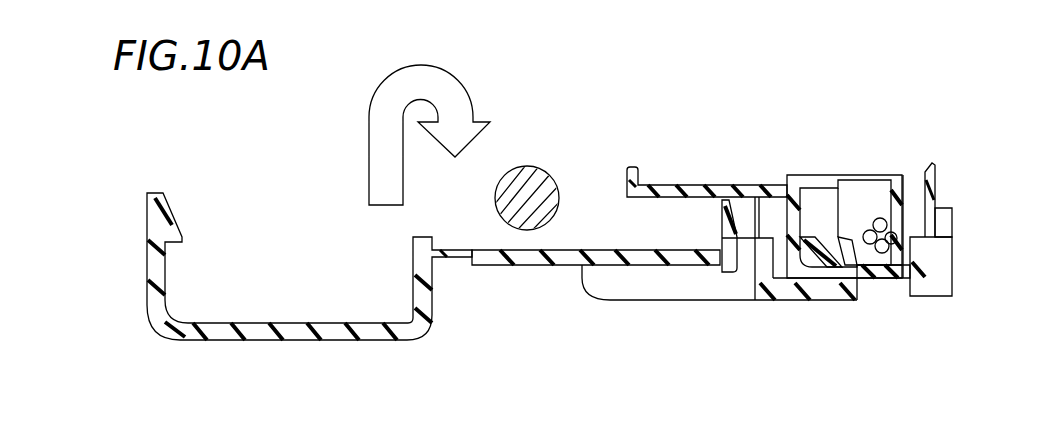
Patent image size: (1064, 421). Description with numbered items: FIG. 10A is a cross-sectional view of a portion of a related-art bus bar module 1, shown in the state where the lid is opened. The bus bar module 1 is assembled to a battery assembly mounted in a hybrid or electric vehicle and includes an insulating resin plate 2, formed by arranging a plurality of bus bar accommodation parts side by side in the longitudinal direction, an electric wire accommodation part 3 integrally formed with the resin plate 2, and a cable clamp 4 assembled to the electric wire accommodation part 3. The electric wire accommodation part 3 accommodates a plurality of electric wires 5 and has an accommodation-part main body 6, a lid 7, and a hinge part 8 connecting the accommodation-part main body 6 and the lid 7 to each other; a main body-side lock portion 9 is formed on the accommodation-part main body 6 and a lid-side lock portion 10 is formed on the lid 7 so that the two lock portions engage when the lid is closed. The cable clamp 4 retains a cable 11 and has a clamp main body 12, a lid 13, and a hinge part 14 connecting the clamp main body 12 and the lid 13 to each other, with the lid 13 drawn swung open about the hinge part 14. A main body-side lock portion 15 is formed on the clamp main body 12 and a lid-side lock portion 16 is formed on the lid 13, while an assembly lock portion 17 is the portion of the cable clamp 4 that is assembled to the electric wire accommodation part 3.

The bus bar module 1 is at (985, 112).
The resin plate 2 is at (936, 305).
The electric wire accommodation part 3 is at (852, 158).
The cable clamp 4 is at (468, 282).
The electric wires 5 is at (884, 246).
The accommodation-part main body 6 is at (912, 212).
The lid 7 is at (672, 185).
The hinge part 8 is at (763, 185).
The main body-side lock portion 9 is at (913, 183).
The lid-side lock portion 10 is at (623, 177).
The cable 11 is at (527, 165).
The clamp main body 12 is at (528, 265).
The lid 13 is at (246, 342).
The hinge part 14 is at (452, 250).
The main body-side lock portion 15 is at (742, 270).
The lid-side lock portion 16 is at (173, 205).
The assembly lock portion 17 is at (847, 237).